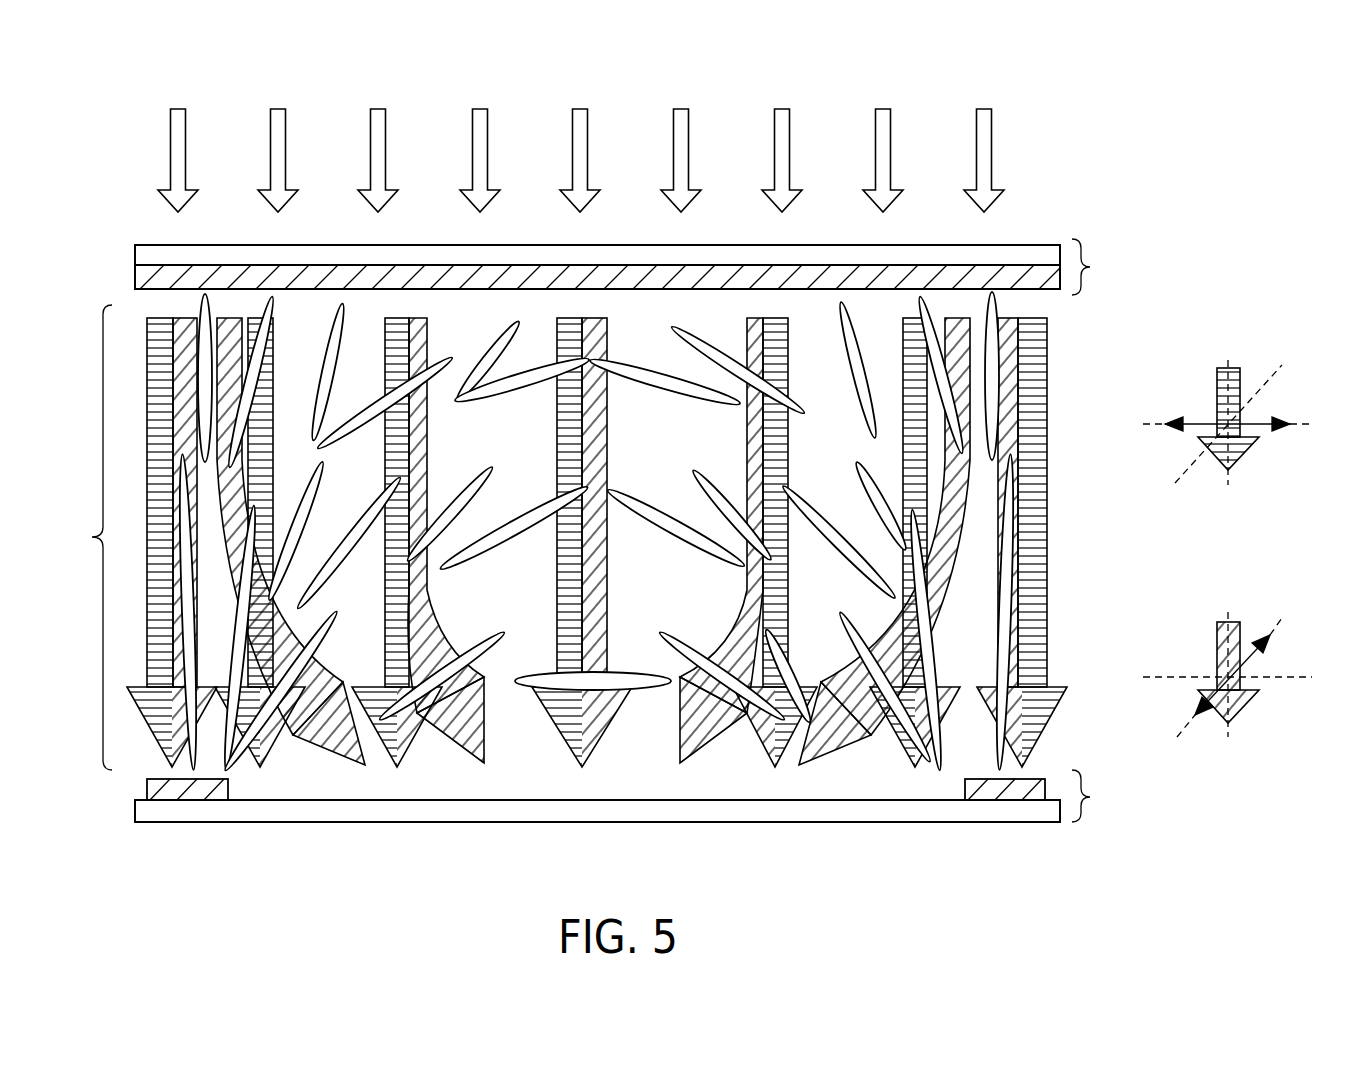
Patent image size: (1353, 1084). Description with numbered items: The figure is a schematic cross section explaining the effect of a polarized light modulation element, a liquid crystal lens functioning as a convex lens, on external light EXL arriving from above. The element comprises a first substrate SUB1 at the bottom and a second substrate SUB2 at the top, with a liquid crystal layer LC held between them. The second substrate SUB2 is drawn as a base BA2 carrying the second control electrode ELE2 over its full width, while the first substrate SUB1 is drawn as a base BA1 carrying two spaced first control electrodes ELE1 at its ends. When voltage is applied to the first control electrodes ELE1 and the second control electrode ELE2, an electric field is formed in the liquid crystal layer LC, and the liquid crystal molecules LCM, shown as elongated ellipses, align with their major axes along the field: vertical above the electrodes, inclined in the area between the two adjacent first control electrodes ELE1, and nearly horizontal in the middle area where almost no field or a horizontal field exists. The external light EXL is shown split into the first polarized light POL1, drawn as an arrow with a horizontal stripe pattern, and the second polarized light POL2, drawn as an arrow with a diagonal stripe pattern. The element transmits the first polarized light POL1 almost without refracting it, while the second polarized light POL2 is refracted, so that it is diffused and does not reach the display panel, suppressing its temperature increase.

The external light EXL is at (784, 108).
The second substrate SUB2 is at (645, 267).
The second base BA2 is at (138, 255).
The second control electrode ELE2 is at (138, 275).
The liquid crystal layer LC is at (588, 533).
The liquid crystal molecules LCM is at (1010, 548).
The first substrate SUB1 is at (645, 796).
The first base BA1 is at (291, 808).
The first control electrodes ELE1 is at (175, 790).
The first polarized light POL1 is at (1267, 418).
The second polarized light POL2 is at (1248, 658).